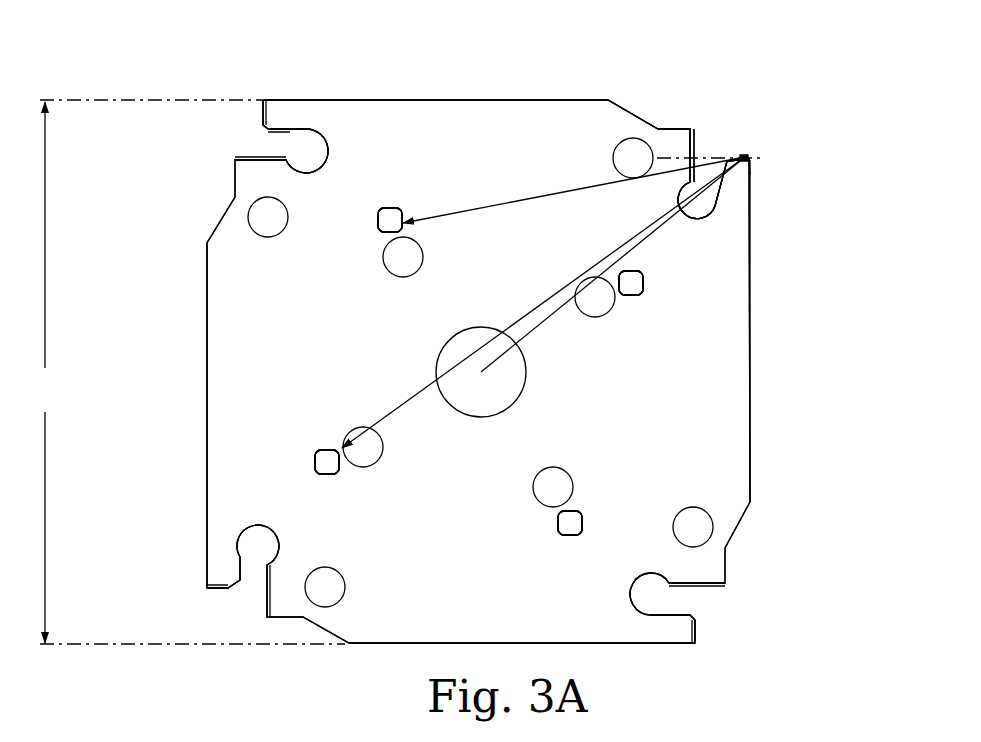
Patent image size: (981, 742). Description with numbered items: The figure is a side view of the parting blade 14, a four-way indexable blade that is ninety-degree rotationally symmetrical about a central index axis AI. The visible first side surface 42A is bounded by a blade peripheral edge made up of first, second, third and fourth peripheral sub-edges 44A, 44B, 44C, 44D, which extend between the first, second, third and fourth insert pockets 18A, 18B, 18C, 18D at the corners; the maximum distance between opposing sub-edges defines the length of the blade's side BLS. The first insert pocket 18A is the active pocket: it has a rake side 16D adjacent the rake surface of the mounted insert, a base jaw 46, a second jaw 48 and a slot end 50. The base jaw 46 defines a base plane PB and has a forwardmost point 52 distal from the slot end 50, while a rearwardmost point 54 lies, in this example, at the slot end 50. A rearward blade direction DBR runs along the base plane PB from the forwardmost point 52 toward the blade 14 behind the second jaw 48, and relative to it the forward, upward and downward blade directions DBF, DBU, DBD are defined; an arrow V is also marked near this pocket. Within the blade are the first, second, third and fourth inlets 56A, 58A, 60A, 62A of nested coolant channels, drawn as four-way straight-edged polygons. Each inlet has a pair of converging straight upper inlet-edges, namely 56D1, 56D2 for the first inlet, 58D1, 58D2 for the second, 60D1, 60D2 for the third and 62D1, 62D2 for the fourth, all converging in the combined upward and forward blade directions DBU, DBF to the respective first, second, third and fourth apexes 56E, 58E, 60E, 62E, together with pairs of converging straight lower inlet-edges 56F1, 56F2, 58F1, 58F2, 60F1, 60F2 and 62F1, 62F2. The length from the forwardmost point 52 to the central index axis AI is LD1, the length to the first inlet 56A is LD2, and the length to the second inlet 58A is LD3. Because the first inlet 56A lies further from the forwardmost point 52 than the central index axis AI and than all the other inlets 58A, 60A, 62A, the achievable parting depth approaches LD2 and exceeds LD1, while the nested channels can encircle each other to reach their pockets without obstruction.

The parting blade 14 is at (212, 58).
The first side surface 42A is at (418, 572).
The first peripheral sub-edge 44A is at (485, 95).
The second peripheral sub-edge 44B is at (752, 420).
The third peripheral sub-edge 44C is at (593, 648).
The fourth peripheral sub-edge 44D is at (205, 312).
The rake side 16D is at (666, 121).
The first insert pocket 18A is at (733, 125).
The second insert pocket 18B is at (716, 603).
The third insert pocket 18C is at (230, 605).
The fourth insert pocket 18D is at (232, 133).
The base jaw 46 is at (745, 152).
The second jaw 48 is at (697, 130).
The slot end 50 is at (691, 221).
The forwardmost point 52 is at (756, 148).
The rearwardmost point 54 is at (674, 192).
The base plane PB is at (767, 159).
The view direction V is at (772, 76).
The length of the blade's side BLS is at (55, 372).
The central index axis AI is at (479, 378).
The length from forwardmost point to central index axis LD1 is at (527, 352).
The length from forwardmost point to first inlet LD2 is at (550, 303).
The length from forwardmost point to second inlet LD3 is at (495, 206).
The second inlet 58A is at (379, 204).
The second apex 58E is at (403, 208).
The straight lower inlet-edge 58F1 is at (393, 233).
The straight lower inlet-edge 58F2 is at (379, 219).
The straight upper inlet-edge 58D1 is at (398, 212).
The straight upper inlet-edge 58D2 is at (380, 231).
The first inlet 56A is at (313, 440).
The first apex 56E is at (340, 462).
The straight lower inlet-edge 56F1 is at (327, 475).
The straight lower inlet-edge 56F2 is at (315, 462).
The straight upper inlet-edge 56D1 is at (331, 475).
The straight upper inlet-edge 56D2 is at (317, 453).
The third inlet 60A is at (644, 306).
The third apex 60E is at (646, 283).
The straight lower inlet-edge 60F1 is at (626, 296).
The straight lower inlet-edge 60F2 is at (619, 275).
The straight upper inlet-edge 60D1 is at (632, 296).
The straight upper inlet-edge 60D2 is at (648, 273).
The fourth inlet 62A is at (574, 540).
The fourth apex 62E is at (583, 511).
The straight lower inlet-edge 62F1 is at (568, 537).
The straight lower inlet-edge 62F2 is at (562, 530).
The straight upper inlet-edge 62D1 is at (566, 535).
The straight upper inlet-edge 62D2 is at (560, 520).
The upward blade direction DBU is at (878, 150).
The downward blade direction DBD is at (878, 160).
The rearward blade direction DBR is at (873, 155).
The forward blade direction DBF is at (914, 155).